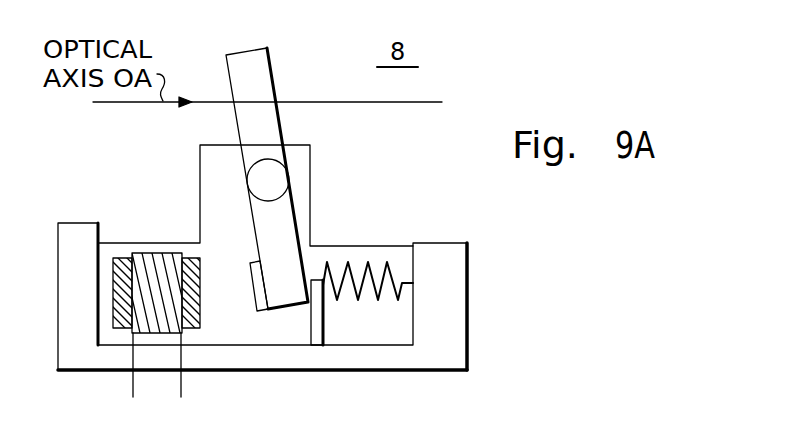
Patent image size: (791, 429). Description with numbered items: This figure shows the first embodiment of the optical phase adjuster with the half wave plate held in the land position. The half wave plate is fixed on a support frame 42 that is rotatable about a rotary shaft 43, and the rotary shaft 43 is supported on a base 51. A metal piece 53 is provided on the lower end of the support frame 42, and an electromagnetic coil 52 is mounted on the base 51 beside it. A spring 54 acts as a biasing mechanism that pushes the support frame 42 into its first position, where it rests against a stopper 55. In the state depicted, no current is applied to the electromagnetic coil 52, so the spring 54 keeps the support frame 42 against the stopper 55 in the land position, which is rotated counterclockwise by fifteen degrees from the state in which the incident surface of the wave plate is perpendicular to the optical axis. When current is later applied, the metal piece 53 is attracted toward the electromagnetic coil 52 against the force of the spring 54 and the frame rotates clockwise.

The support frame 42 is at (275, 73).
The rotary shaft 43 is at (275, 180).
The base 51 is at (452, 315).
The electromagnetic coil 52 is at (140, 322).
The metal piece 53 is at (252, 272).
The spring 54 is at (368, 263).
The stopper 55 is at (318, 333).